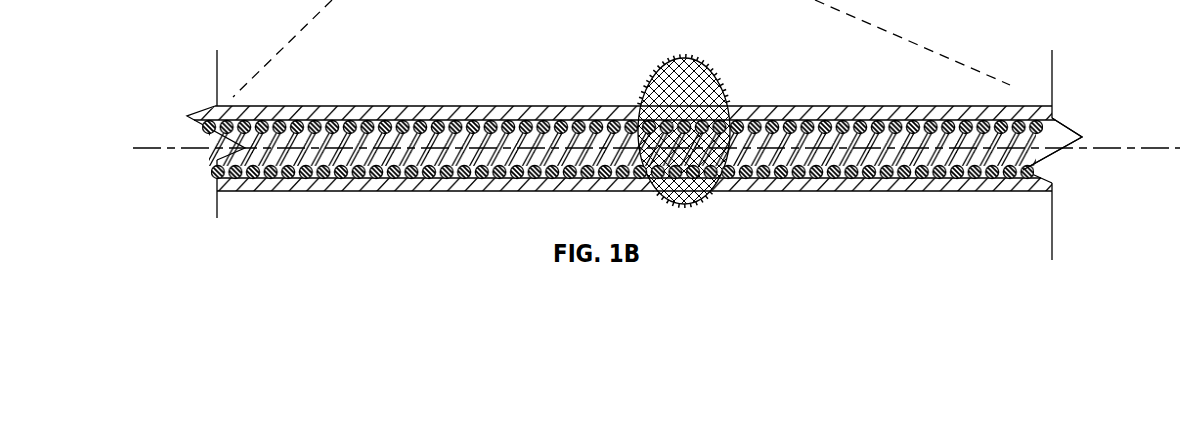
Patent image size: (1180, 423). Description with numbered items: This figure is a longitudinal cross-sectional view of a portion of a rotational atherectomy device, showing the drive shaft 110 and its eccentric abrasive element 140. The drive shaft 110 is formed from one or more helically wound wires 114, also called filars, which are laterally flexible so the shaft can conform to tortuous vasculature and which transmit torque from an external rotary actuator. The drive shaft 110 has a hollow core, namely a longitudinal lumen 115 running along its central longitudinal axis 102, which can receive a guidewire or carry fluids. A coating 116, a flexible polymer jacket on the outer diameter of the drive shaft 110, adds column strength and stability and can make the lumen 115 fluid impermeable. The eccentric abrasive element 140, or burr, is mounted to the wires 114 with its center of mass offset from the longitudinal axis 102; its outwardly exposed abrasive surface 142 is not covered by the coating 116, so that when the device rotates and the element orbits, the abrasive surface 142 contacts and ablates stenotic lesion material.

The central longitudinal axis 102 is at (164, 147).
The drive shaft 110 is at (634, 134).
The helically wound wires 114 is at (828, 122).
The longitudinal lumen 115 is at (1066, 130).
The coating 116 is at (496, 107).
The eccentric abrasive element 140 is at (673, 107).
The abrasive surface 142 is at (697, 63).